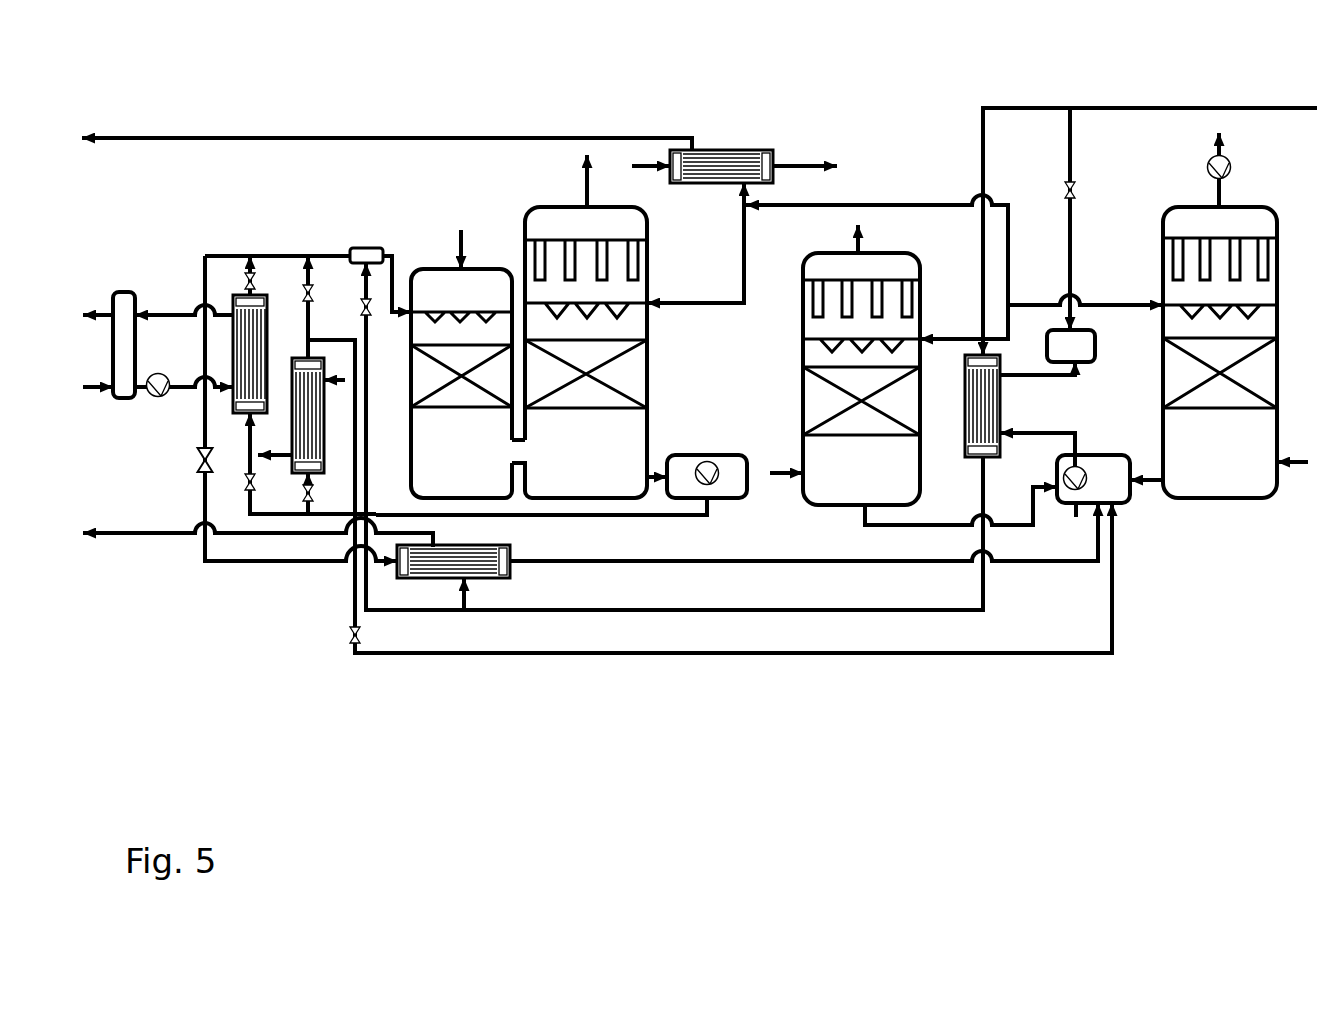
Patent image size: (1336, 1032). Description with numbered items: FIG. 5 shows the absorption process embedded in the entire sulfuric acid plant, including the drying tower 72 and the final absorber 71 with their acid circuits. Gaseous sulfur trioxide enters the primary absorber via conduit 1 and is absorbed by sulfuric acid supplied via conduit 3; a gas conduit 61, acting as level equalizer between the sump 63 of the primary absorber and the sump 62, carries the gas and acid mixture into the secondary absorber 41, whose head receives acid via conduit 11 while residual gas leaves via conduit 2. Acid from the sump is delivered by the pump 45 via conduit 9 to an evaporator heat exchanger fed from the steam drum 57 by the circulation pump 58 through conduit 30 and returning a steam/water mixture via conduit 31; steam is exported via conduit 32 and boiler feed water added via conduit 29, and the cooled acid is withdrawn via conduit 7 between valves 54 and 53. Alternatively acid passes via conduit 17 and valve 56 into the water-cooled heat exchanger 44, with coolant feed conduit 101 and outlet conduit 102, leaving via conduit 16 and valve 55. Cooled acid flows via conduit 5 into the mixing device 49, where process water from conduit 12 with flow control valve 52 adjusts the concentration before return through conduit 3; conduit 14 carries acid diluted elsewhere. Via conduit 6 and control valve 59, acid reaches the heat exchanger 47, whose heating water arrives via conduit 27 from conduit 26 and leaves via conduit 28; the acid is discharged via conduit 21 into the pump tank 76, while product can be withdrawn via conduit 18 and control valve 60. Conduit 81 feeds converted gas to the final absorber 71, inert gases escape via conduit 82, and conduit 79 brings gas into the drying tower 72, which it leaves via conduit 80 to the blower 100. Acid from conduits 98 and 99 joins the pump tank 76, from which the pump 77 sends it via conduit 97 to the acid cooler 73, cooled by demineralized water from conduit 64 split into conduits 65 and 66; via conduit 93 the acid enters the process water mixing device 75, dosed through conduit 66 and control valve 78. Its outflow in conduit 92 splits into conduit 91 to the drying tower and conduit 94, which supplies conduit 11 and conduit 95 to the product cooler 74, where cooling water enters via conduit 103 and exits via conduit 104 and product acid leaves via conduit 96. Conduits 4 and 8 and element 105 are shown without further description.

The conduit 1 is at (457, 240).
The conduit 2 is at (589, 185).
The conduit 3 is at (392, 256).
The header line 4 is at (325, 256).
The conduit 5 is at (278, 256).
The conduit 6 is at (222, 256).
The conduit 7 is at (248, 270).
The line to exchanger 14 8 is at (245, 513).
The conduit 9 is at (590, 515).
The conduit 11 is at (687, 303).
The conduit 12 is at (368, 443).
The conduit 14 is at (303, 318).
The conduit 16 is at (305, 348).
The conduit 17 is at (304, 503).
The conduit 18 is at (585, 653).
The conduit 21 is at (925, 561).
The conduit 26 is at (520, 610).
The conduit 27 is at (462, 600).
The conduit 28 is at (122, 533).
The conduit 29 is at (93, 387).
The conduit 30 is at (220, 387).
The outlet conduit 31 is at (165, 315).
The conduit 32 is at (100, 315).
The secondary absorber 41 is at (647, 397).
The second heat exchanger 44 is at (324, 433).
The pump 45 is at (707, 461).
The heat exchanger 47 is at (510, 550).
The mixing device 49 is at (360, 248).
The flow control valve 52 is at (360, 307).
The shut-off or control valve 53 is at (257, 282).
The shut-off or control valve 54 is at (245, 483).
The shut-off or control valve 55 is at (314, 293).
The shut-off or flow control valve 56 is at (314, 493).
The steam drum 57 is at (135, 345).
The circulation pump 58 is at (160, 397).
The control valve 59 is at (196, 460).
The control valve 60 is at (361, 636).
The gas conduit 61 is at (518, 477).
The sump 62 is at (607, 482).
The sump 63 is at (437, 480).
The conduit 64 is at (1130, 108).
The conduit 65 is at (1023, 108).
The conduit 66 is at (1073, 158).
The final absorber 71 is at (920, 433).
The drying tower 72 is at (1277, 385).
The acid cooler 73 is at (963, 393).
The product cooler 74 is at (745, 150).
The process water mixing device 75 is at (1095, 348).
The pump tank 76 is at (1112, 493).
The pump 77 is at (1084, 469).
The control valve 78 is at (1076, 190).
The conduit 79 is at (1297, 462).
The conduit 80 is at (1222, 190).
The conduit 81 is at (783, 473).
The conduit 82 is at (856, 243).
The conduit 91 is at (1118, 305).
The conduit 92 is at (1010, 320).
The conduit 93 is at (1025, 375).
The conduit 94 is at (888, 205).
The conduit 95 is at (742, 196).
The conduit 96 is at (635, 138).
The conduit 97 is at (1050, 433).
The conduit 98 is at (948, 525).
The conduit 99 is at (1147, 480).
The blower 100 is at (1231, 167).
The feed conduit 101 is at (345, 380).
The outlet conduit 102 is at (272, 455).
The conduit 103 is at (650, 166).
The conduit 104 is at (800, 166).
The outlet of pump unit 76 105 is at (1076, 523).